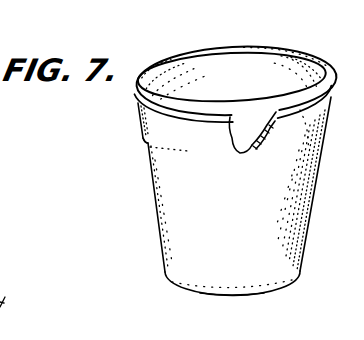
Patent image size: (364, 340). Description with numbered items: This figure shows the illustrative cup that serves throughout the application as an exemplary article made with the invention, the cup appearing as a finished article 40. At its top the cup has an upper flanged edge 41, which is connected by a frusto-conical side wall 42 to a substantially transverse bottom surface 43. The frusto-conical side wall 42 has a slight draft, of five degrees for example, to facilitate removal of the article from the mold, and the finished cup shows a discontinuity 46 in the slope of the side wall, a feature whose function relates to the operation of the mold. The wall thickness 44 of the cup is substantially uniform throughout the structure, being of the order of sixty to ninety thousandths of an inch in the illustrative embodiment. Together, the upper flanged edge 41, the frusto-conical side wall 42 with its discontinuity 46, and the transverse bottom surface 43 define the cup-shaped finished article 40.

The finished article 40 is at (218, 26).
The upper flanged edge 41 is at (133, 85).
The frusto-conical side wall 42 is at (150, 195).
The transverse bottom surface 43 is at (220, 295).
The wall thickness 44 is at (268, 134).
The discontinuity in the slope of the side wall 46 is at (143, 140).